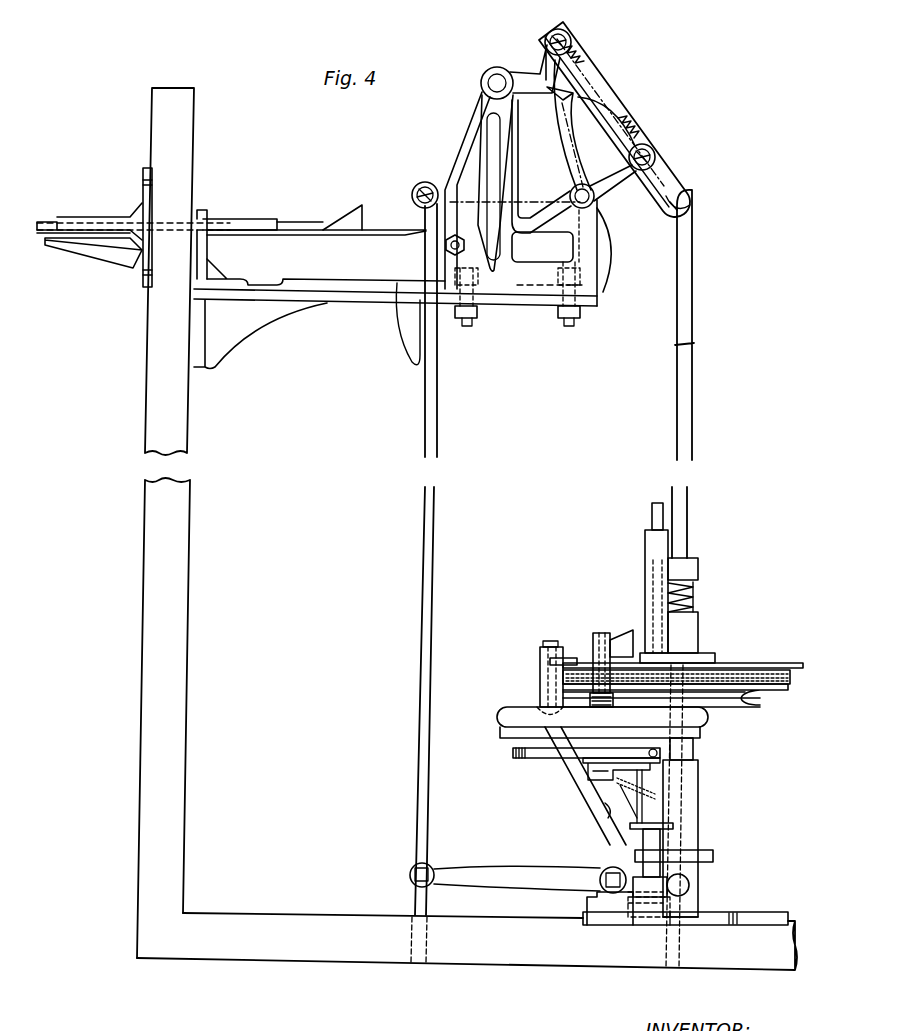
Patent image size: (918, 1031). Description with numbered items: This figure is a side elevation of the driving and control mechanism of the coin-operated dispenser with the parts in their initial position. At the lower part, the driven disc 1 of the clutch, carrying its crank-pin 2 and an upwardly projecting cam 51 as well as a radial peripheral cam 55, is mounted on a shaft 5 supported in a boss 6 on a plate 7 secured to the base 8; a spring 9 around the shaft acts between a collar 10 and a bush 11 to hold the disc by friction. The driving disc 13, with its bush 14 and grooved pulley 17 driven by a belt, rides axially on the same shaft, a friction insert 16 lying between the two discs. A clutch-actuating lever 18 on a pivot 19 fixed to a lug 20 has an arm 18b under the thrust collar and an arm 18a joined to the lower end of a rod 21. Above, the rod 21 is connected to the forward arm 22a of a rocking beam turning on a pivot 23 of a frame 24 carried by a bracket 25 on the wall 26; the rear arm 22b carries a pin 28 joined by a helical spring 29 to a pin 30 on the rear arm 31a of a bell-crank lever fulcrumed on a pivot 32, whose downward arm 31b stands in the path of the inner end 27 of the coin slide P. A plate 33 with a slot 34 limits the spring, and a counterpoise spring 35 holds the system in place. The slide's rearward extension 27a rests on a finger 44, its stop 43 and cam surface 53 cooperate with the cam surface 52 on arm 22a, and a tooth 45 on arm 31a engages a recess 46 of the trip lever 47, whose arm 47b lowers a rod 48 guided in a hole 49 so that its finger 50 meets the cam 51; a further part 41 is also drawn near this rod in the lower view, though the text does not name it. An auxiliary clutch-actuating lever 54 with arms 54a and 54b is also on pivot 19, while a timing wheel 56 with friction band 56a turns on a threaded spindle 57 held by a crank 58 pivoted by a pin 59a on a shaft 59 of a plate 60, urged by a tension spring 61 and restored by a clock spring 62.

The coin slide P is at (292, 226).
The driven disc 1 is at (766, 663).
The crank-pin 2 is at (646, 540).
The shaft 5 is at (697, 605).
The boss 6 is at (698, 890).
The plate 7 is at (751, 922).
The base 8 is at (343, 935).
The spring 9 is at (697, 590).
The collar 10 is at (700, 565).
The bush 11 is at (700, 643).
The driving disc 13 is at (770, 690).
The bush 14 is at (696, 748).
The friction insert 16 is at (784, 678).
The grooved pulley 17 is at (759, 706).
The clutch-actuating lever 18 is at (546, 870).
The arm 18a is at (483, 873).
The arm 18b is at (682, 892).
The pivot 19 is at (600, 884).
The lug 20 is at (608, 904).
The rod 21 is at (437, 408).
The arm 22a is at (452, 192).
The arm 22b is at (616, 176).
The pivot 23 is at (600, 286).
The frame 24 is at (590, 320).
The bracket 25 is at (335, 293).
The wall 26 is at (180, 405).
The inner end 27 is at (405, 240).
The rearward extension 27a is at (514, 240).
The pin 28 is at (656, 157).
The helical spring 29 is at (640, 128).
The pin 30 is at (572, 40).
The arm 31a is at (532, 74).
The arm 31b is at (488, 143).
The pivot 32 is at (481, 82).
The plate 33 is at (586, 60).
The slot 34 is at (692, 184).
The counterpoise spring 35 is at (584, 180).
The rod 41 is at (687, 512).
The stop 43 is at (337, 217).
The finger 44 is at (453, 250).
The tooth 45 is at (592, 100).
The recess 46 is at (588, 75).
The trip lever 47 is at (610, 216).
The arm 47b is at (683, 206).
The rod 48 is at (692, 412).
The hole 49 is at (670, 962).
The finger 50 is at (700, 615).
The cam 51 is at (617, 633).
The cam surface 52 is at (414, 188).
The cam surface 53 is at (405, 233).
The auxiliary clutch-actuating lever 54 is at (600, 800).
The arm 54a is at (715, 856).
The arm 54b is at (543, 677).
The cam 55 is at (577, 662).
The timing wheel 56 is at (500, 710).
The friction band 56a is at (497, 718).
The spindle 57 is at (597, 647).
The crank 58 is at (600, 762).
The shaft 59 is at (643, 848).
The pin 59a is at (675, 826).
The plate 60 is at (648, 914).
The tension spring 61 is at (668, 773).
The clock spring 62 is at (508, 759).